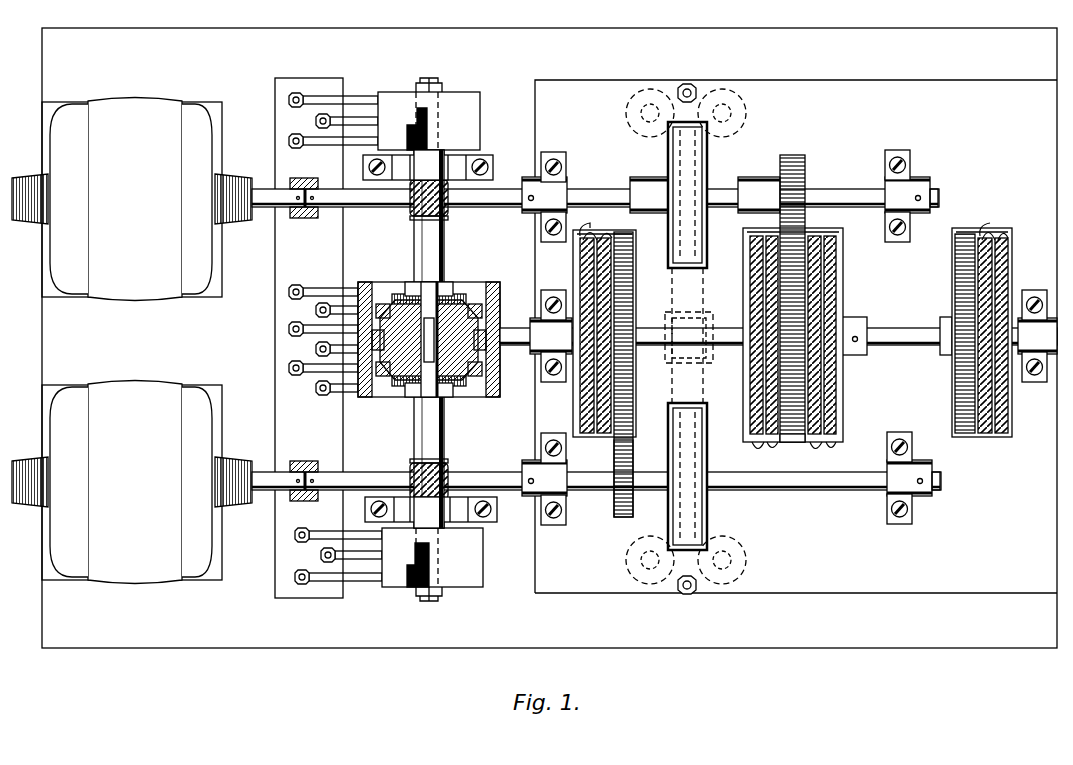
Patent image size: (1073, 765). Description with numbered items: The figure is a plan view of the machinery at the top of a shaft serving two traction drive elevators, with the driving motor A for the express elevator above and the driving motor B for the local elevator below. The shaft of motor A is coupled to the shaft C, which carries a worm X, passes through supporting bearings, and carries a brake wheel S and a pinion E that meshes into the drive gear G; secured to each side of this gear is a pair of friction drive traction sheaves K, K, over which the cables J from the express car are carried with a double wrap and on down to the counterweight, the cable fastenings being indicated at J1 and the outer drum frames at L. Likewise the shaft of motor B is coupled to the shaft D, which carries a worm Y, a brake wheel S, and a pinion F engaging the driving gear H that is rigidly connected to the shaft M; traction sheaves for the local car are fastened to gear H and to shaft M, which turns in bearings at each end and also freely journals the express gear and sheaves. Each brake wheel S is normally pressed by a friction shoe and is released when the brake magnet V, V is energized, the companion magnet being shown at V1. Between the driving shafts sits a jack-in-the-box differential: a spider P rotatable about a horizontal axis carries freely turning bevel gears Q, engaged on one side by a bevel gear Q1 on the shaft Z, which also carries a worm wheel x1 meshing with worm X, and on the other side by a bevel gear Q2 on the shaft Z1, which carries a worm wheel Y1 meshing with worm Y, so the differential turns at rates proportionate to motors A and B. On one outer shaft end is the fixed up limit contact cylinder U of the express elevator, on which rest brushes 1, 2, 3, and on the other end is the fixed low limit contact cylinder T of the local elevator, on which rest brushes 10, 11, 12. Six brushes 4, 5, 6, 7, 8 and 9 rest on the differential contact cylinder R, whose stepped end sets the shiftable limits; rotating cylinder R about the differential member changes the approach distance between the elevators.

The driving motor for the express elevator A is at (132, 199).
The driving motor for the local elevator B is at (132, 482).
The shaft C is at (333, 208).
The shaft D is at (326, 474).
The pinion E is at (801, 165).
The pinion F is at (616, 505).
The drive gear G is at (797, 445).
The driving gear H is at (624, 400).
The cables J is at (794, 220).
The cord fastening J1 is at (802, 454).
The friction drive traction sheaves K is at (745, 292).
The drum L is at (580, 278).
The shaft M is at (898, 330).
The spider P is at (470, 300).
The mitre or bevel gears Q is at (388, 308).
The mitre or bevel gear Q1 is at (400, 298).
The mitre or bevel gear Q2 is at (396, 384).
The contact cylinder R is at (437, 339).
The brake wheel S is at (698, 256).
The fixed low limit contact cylinder T is at (477, 576).
The fixed up limit contact cylinder U is at (470, 112).
The magnet V is at (626, 102).
The cam V1 is at (655, 586).
The worm X is at (414, 218).
The worm wheel x1 is at (465, 212).
The worm Y is at (410, 474).
The worm wheel Y1 is at (485, 466).
The shaft Z is at (434, 247).
The shaft Z1 is at (434, 458).
The brush 1 is at (328, 98).
The brush 2 is at (341, 119).
The brush 3 is at (328, 139).
The brush 4 is at (318, 290).
The brush 5 is at (331, 309).
The brush 6 is at (318, 328).
The brush 7 is at (331, 348).
The brush 8 is at (318, 367).
The brush 9 is at (331, 387).
The brush 10 is at (332, 525).
The brush 11 is at (344, 554).
The brush 12 is at (333, 586).